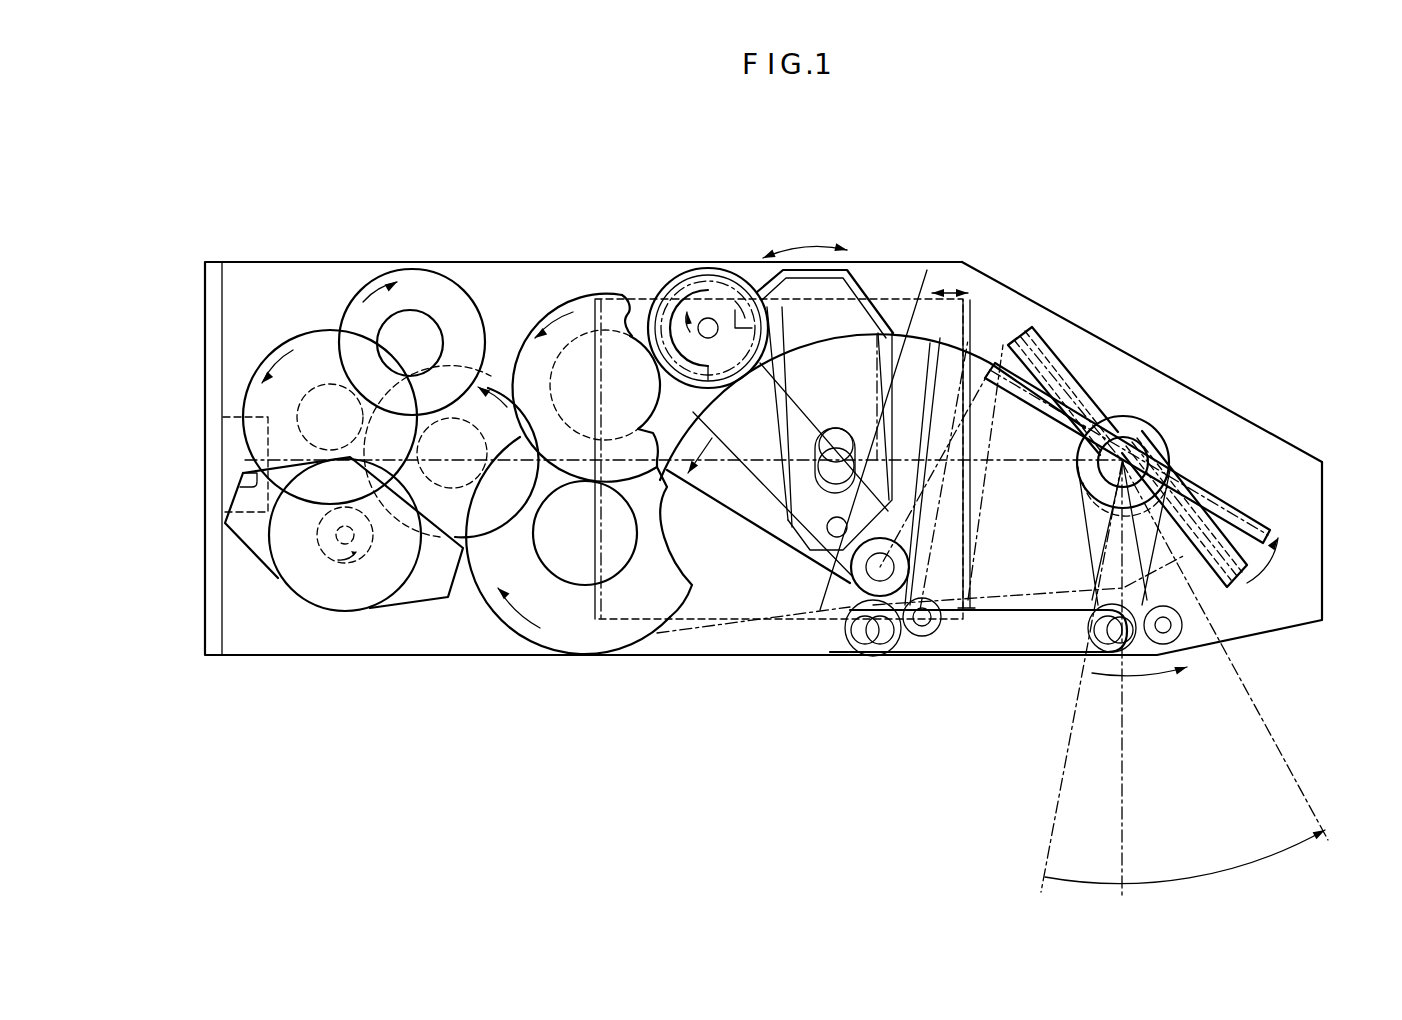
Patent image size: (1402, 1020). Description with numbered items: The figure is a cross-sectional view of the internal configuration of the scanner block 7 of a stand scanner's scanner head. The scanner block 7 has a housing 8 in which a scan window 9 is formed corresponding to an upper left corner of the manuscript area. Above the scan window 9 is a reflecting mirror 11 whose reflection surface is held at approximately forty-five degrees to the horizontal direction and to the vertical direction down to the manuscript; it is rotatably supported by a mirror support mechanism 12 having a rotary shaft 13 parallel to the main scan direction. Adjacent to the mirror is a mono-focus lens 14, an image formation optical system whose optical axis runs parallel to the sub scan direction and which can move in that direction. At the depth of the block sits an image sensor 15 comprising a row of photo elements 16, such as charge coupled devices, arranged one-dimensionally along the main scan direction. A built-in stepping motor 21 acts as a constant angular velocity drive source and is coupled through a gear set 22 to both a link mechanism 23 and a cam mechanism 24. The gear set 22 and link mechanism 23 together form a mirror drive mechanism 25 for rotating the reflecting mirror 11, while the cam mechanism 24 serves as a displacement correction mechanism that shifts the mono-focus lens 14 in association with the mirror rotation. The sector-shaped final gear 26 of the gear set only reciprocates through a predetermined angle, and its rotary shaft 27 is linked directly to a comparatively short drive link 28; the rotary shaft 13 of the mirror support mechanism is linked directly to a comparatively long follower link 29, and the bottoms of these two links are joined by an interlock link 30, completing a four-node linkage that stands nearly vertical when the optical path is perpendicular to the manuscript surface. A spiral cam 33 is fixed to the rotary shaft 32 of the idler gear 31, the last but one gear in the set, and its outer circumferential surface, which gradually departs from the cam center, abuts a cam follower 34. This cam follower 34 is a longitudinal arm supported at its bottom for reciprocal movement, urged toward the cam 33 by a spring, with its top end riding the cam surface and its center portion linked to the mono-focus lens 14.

The scanner block 7 is at (1024, 254).
The housing 8 is at (1258, 418).
The scan window 9 is at (1150, 662).
The reflecting mirror 11 is at (1042, 353).
The mirror support mechanism 12 is at (1133, 397).
The rotary shaft 13 is at (1143, 453).
The mono-focus lens 14 is at (712, 623).
The image sensor 15 is at (242, 418).
The photo elements 16 is at (257, 487).
The stepping motor 21 is at (320, 610).
The gear set 22 is at (453, 625).
The link mechanism 23 is at (972, 663).
The cam mechanism 24 is at (802, 228).
The mirror drive mechanism 25 is at (1233, 493).
The final gear 26 is at (915, 340).
The rotary shaft 27 is at (860, 578).
The drive link 28 is at (880, 567).
The follower link 29 is at (1185, 590).
The interlock link 30 is at (1035, 635).
The idler gear 31 is at (665, 292).
The rotary shaft 32 is at (702, 322).
The cam 33 is at (708, 318).
The cam follower 34 is at (858, 280).